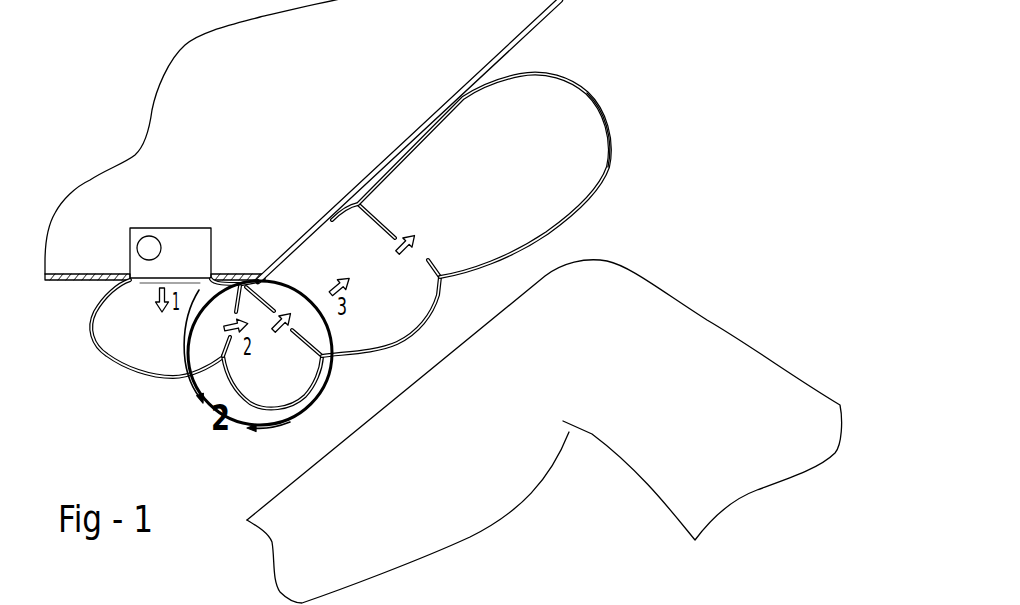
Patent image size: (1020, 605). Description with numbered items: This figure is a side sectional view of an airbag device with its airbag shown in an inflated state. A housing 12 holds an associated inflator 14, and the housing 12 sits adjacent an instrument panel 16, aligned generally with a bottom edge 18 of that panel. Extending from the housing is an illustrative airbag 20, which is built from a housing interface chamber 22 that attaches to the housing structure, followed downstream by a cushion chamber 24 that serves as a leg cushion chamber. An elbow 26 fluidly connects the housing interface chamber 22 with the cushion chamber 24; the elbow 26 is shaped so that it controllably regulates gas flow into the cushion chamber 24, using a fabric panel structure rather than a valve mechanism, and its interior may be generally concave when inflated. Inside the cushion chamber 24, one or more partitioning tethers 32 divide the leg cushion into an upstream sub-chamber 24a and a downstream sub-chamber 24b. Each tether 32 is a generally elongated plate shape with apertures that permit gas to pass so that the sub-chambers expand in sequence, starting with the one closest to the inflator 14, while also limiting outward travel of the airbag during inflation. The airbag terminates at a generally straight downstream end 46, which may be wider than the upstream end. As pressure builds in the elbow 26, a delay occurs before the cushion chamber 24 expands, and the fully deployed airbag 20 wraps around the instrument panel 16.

The housing 12 is at (191, 228).
The inflator 14 is at (150, 236).
The instrument panel 16 is at (490, 65).
The bottom edge 18 is at (241, 279).
The airbag 20 is at (378, 257).
The housing interface chamber 22 is at (130, 375).
The cushion chamber 24 is at (489, 215).
The upstream sub-chamber 24a is at (405, 308).
The downstream sub-chamber 24b is at (568, 183).
The elbow 26 is at (286, 412).
The tethers 32 is at (307, 345).
The downstream end 46 is at (597, 102).